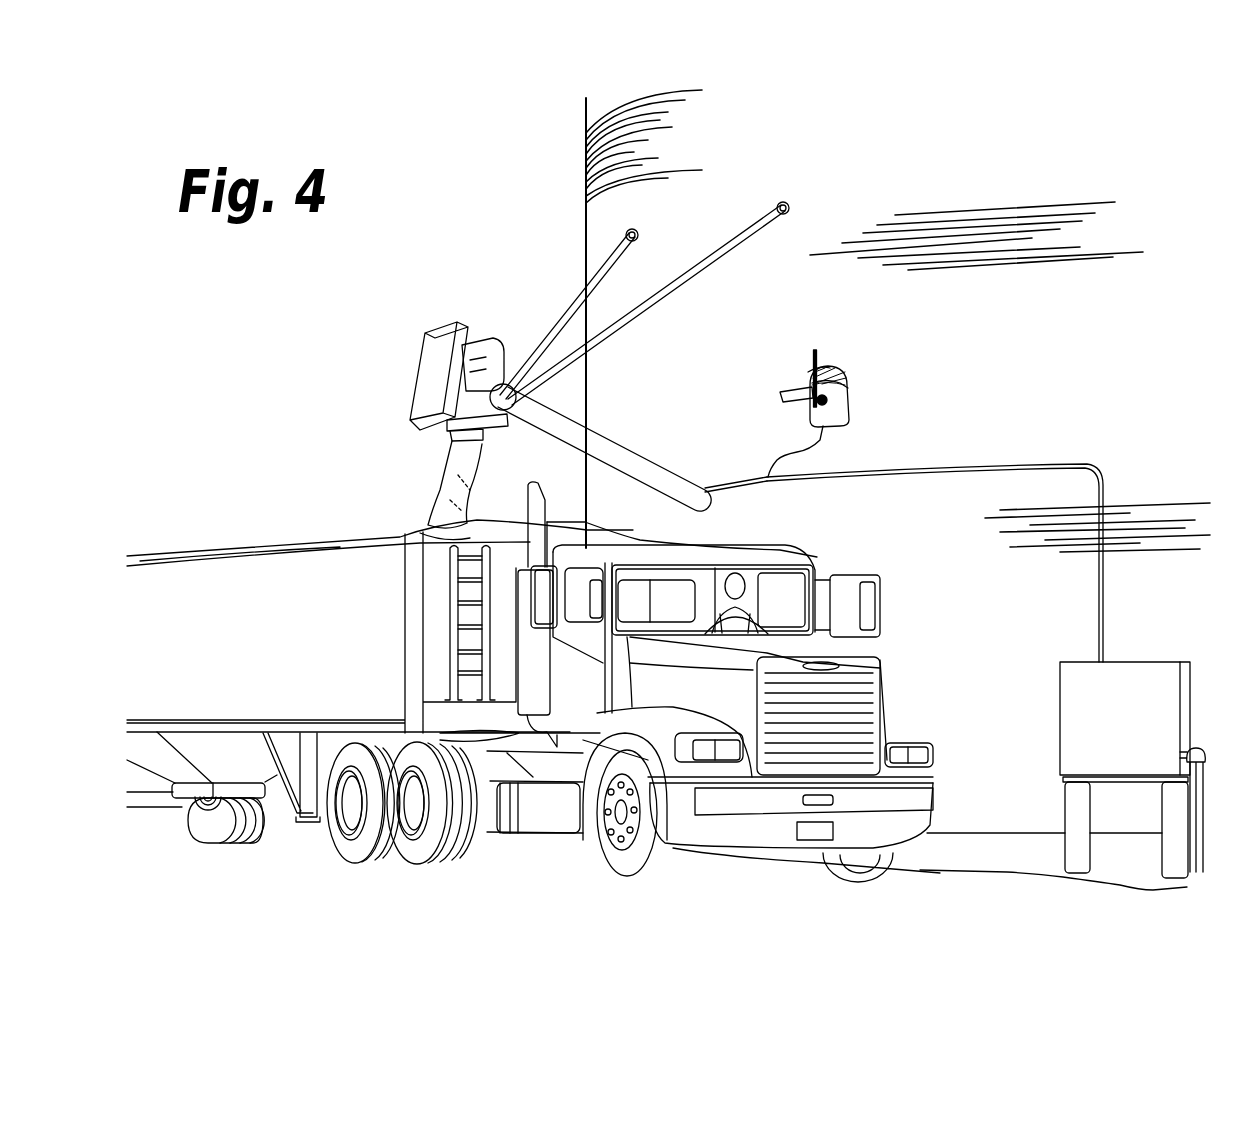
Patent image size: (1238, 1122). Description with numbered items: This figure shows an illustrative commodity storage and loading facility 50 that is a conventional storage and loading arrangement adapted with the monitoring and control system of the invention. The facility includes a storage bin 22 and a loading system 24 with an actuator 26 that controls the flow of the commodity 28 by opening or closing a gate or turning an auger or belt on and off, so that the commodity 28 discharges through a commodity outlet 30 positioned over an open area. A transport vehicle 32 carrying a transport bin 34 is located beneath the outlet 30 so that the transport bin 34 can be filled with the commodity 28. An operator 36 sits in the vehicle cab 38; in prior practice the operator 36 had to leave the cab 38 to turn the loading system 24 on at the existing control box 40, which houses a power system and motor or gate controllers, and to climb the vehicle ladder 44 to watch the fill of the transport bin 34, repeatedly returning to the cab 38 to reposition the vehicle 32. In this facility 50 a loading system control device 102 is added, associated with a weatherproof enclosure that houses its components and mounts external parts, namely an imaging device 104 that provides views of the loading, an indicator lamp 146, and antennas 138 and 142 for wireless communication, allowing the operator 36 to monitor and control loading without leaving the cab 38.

The commodity storage and loading facility 50 is at (365, 80).
The storage bin 22 is at (585, 262).
The loading system 24 is at (417, 380).
The actuator 26 is at (482, 343).
The commodity outlet 30 is at (443, 437).
The commodity 28 is at (443, 480).
The vehicle ladder 44 is at (453, 582).
The transport bin 34 is at (240, 556).
The vehicle cab 38 is at (515, 627).
The transport vehicle 32 is at (878, 657).
The operator 36 is at (748, 583).
The control box 40 is at (1060, 727).
The loading system control device 102 is at (847, 418).
The imaging device 104 is at (797, 400).
The antenna 138 is at (813, 362).
The antenna 142 is at (815, 378).
The indicator lamp 146 is at (830, 373).